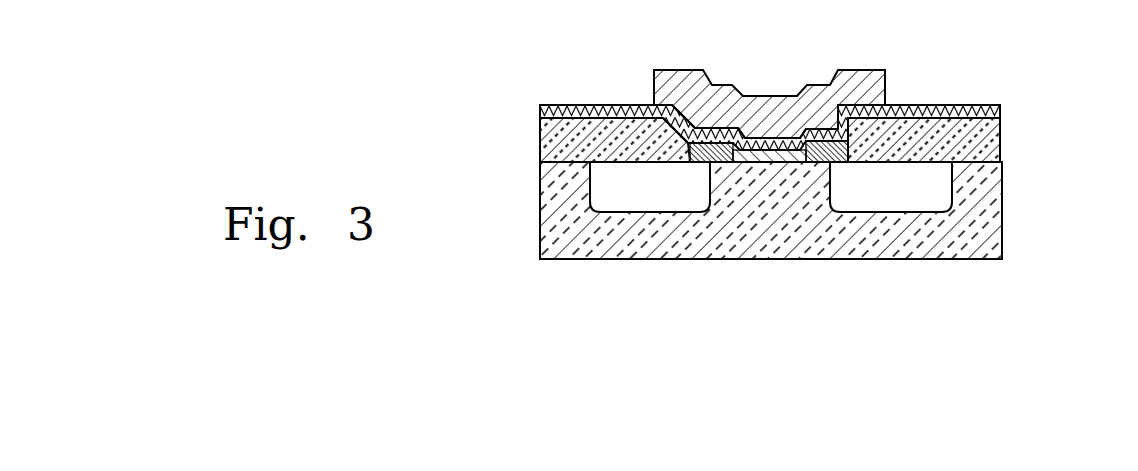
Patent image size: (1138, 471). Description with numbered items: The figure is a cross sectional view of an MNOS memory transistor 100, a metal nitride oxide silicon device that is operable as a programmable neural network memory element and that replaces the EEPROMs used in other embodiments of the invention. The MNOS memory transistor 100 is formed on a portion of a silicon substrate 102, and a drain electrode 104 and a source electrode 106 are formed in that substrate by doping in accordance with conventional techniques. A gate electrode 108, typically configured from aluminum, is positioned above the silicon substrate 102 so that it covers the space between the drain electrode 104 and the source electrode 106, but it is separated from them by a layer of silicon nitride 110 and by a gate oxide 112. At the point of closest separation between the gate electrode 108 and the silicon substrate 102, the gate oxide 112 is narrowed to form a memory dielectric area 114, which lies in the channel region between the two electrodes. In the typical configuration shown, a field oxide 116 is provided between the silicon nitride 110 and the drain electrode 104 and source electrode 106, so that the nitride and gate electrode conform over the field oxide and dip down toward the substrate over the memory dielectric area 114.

The MNOS memory transistor 100 is at (762, 165).
The silicon substrate 102 is at (1004, 203).
The drain electrode 104 is at (917, 212).
The source electrode 106 is at (660, 212).
The gate electrode 108 is at (858, 78).
The silicon nitride 110 is at (766, 143).
The gate oxide 112 is at (813, 163).
The memory dielectric area 114 is at (769, 163).
The field oxide 116 is at (572, 134).